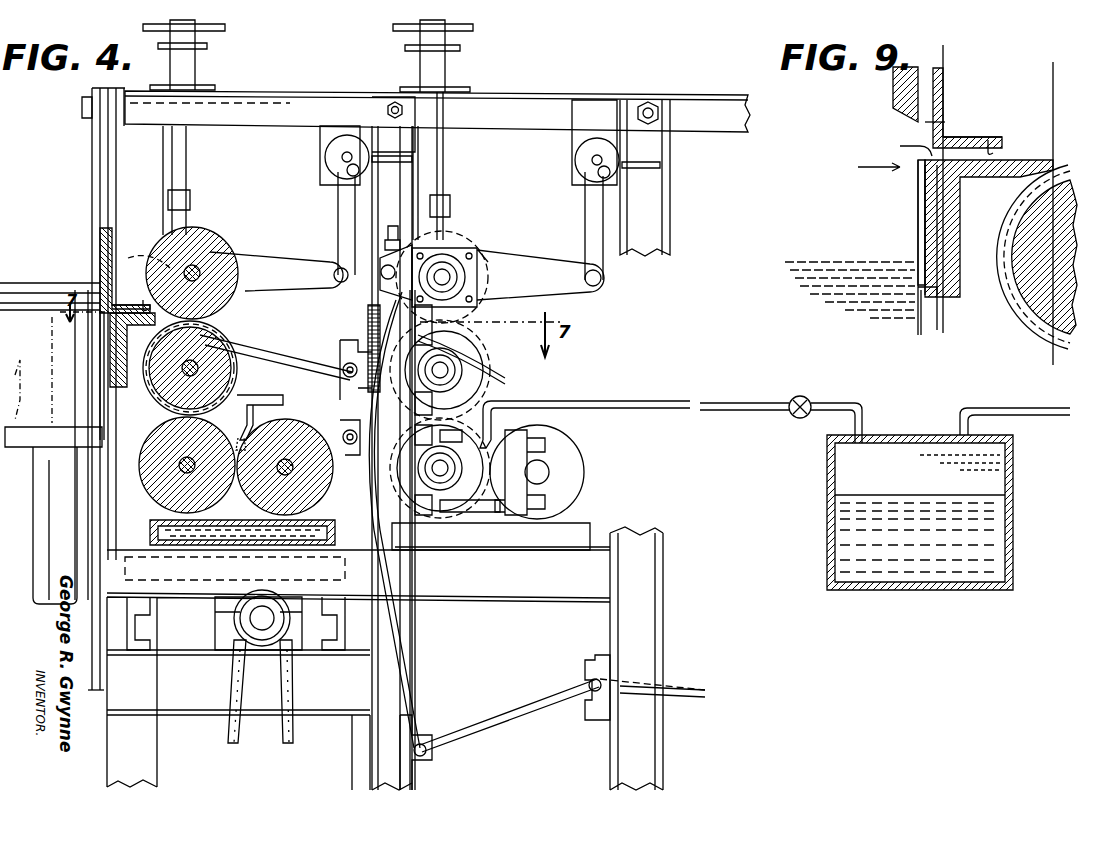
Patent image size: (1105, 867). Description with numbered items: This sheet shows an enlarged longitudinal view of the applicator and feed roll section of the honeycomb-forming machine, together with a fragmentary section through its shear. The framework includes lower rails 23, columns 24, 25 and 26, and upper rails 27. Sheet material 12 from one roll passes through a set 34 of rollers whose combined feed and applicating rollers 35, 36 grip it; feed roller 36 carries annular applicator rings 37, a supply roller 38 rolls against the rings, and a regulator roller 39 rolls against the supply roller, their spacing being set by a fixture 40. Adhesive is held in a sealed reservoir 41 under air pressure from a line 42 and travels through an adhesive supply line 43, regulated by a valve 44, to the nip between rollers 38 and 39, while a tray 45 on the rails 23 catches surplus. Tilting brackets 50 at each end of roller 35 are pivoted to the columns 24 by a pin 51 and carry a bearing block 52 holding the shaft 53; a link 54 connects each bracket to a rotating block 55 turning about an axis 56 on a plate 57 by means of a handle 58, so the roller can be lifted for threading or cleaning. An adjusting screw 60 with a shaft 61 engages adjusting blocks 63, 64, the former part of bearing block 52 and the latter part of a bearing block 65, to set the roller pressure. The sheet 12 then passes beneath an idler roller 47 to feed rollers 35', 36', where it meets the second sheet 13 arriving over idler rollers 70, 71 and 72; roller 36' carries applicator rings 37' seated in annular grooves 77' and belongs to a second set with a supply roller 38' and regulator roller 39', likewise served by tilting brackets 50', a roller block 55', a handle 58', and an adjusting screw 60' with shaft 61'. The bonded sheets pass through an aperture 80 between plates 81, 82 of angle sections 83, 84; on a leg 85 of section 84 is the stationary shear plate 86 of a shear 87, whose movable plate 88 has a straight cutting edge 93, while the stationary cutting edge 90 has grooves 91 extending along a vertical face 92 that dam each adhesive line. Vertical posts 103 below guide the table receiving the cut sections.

In FIG. 4, the sheet material 12 is at (508, 370).
In FIG. 4, the sheet 13 is at (525, 705).
In FIG. 4, the rails 23 is at (478, 602).
In FIG. 4, the columns 24 is at (338, 205).
In FIG. 4, the column 25 is at (130, 153).
In FIG. 4, the columns 26 is at (650, 615).
In FIG. 4, the upper rails 27 is at (503, 105).
In FIG. 4, the set of rollers 34 is at (282, 380).
In FIG. 4, the combined feed and applicating roller 35 is at (448, 265).
In FIG. 4, the feed roller 35' is at (198, 263).
In FIG. 4, the feed roller 36 is at (462, 362).
In FIG. 4, the feed roller 36' is at (202, 361).
In FIG. 9, the feed roller 36' is at (1043, 272).
In FIG. 4, the annular applicator rings 37 is at (462, 370).
In FIG. 4, the annular applicator rings 37' is at (218, 364).
In FIG. 9, the annular applicator rings 37' is at (1014, 257).
In FIG. 4, the supply roller 38 is at (445, 497).
In FIG. 4, the supply roller 38' is at (223, 481).
In FIG. 4, the regulator roller 39 is at (552, 472).
In FIG. 4, the regulator roller 39' is at (292, 467).
In FIG. 4, the fixture 40 is at (560, 494).
In FIG. 4, the sealed reservoir 41 is at (825, 513).
In FIG. 4, the line 42 is at (1022, 410).
In FIG. 4, the adhesive supply line 43 is at (600, 408).
In FIG. 4, the valve 44 is at (805, 395).
In FIG. 4, the tray 45 is at (567, 545).
In FIG. 4, the idler roller 47 is at (348, 360).
In FIG. 4, the tilting brackets 50 is at (540, 265).
In FIG. 4, the tilting bracket 50' is at (279, 257).
In FIG. 4, the pin 51 is at (386, 275).
In FIG. 4, the bearing block 52 is at (478, 260).
In FIG. 4, the shaft 53 is at (442, 272).
In FIG. 4, the link 54 is at (584, 203).
In FIG. 4, the rotating block 55 is at (574, 156).
In FIG. 4, the roller block 55' is at (318, 155).
In FIG. 4, the axis 56 is at (592, 158).
In FIG. 4, the plate 57 is at (598, 103).
In FIG. 4, the handle 58 is at (645, 178).
In FIG. 4, the handle 58' is at (393, 129).
In FIG. 4, the adjusting screw 60 is at (446, 56).
In FIG. 4, the adjusting screw 60' is at (197, 55).
In FIG. 4, the shaft 61 is at (445, 166).
In FIG. 4, the shaft 61' is at (192, 180).
In FIG. 4, the adjusting block 63 is at (400, 243).
In FIG. 4, the adjusting block 64 is at (378, 345).
In FIG. 4, the bearing block 65 is at (470, 350).
In FIG. 4, the idler rollers 70 is at (593, 695).
In FIG. 4, the idler roller 71 is at (428, 735).
In FIG. 4, the idler roller 72 is at (350, 445).
In FIG. 4, the annular grooves 77' is at (257, 411).
In FIG. 9, the annular grooves 77' is at (1024, 257).
In FIG. 4, the aperture 80 is at (147, 301).
In FIG. 9, the aperture 80 is at (989, 140).
In FIG. 4, the plate 81 is at (131, 298).
In FIG. 9, the plate 81 is at (956, 140).
In FIG. 4, the plate 82 is at (138, 325).
In FIG. 9, the plate 82 is at (975, 178).
In FIG. 4, the angle section 83 is at (112, 275).
In FIG. 9, the angle section 83 is at (950, 82).
In FIG. 4, the angle section 84 is at (110, 357).
In FIG. 9, the angle section 84 is at (942, 204).
In FIG. 4, the leg 85 is at (100, 343).
In FIG. 9, the leg 85 is at (945, 230).
In FIG. 4, the stationary shear plate 86 is at (100, 375).
In FIG. 9, the stationary shear plate 86 is at (930, 248).
In FIG. 9, the shear 87 is at (865, 167).
In FIG. 9, the movable shear plate 88 is at (892, 80).
In FIG. 9, the cutting edge 90 is at (899, 144).
In FIG. 9, the grooves 91 is at (918, 156).
In FIG. 4, the vertical face 92 is at (100, 327).
In FIG. 9, the vertical face 92 is at (918, 182).
In FIG. 9, the cutting edge 93 is at (925, 130).
In FIG. 4, the vertical posts 103 is at (58, 512).